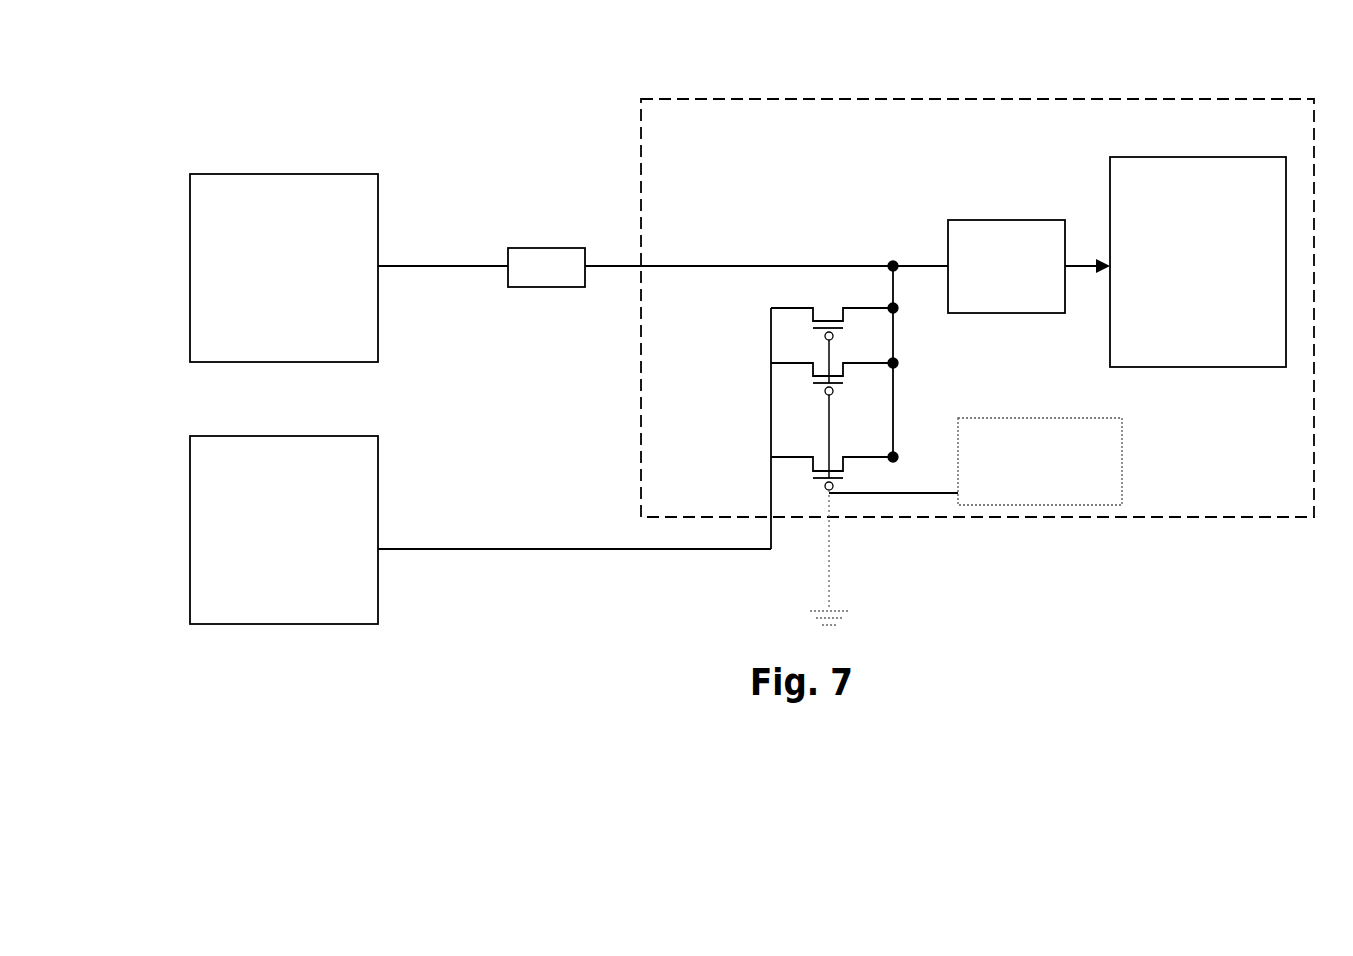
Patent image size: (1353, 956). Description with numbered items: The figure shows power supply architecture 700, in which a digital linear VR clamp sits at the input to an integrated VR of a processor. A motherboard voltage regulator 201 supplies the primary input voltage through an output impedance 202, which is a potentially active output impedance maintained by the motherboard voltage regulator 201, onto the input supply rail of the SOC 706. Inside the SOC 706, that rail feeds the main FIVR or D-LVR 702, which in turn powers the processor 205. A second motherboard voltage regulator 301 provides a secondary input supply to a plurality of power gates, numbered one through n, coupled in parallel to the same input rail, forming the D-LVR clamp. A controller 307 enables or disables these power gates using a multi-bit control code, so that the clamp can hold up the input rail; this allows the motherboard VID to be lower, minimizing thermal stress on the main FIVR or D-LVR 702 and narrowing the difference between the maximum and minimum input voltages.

The power supply architecture 700 is at (194, 105).
The motherboard voltage regulator 201 is at (284, 268).
The output impedance 202 is at (546, 267).
The second motherboard voltage regulator 301 is at (284, 530).
The SOC 706 is at (977, 362).
The FIVR or D-LVR 702 is at (1006, 266).
The processor 205 is at (1198, 262).
The controller 307 is at (1040, 461).